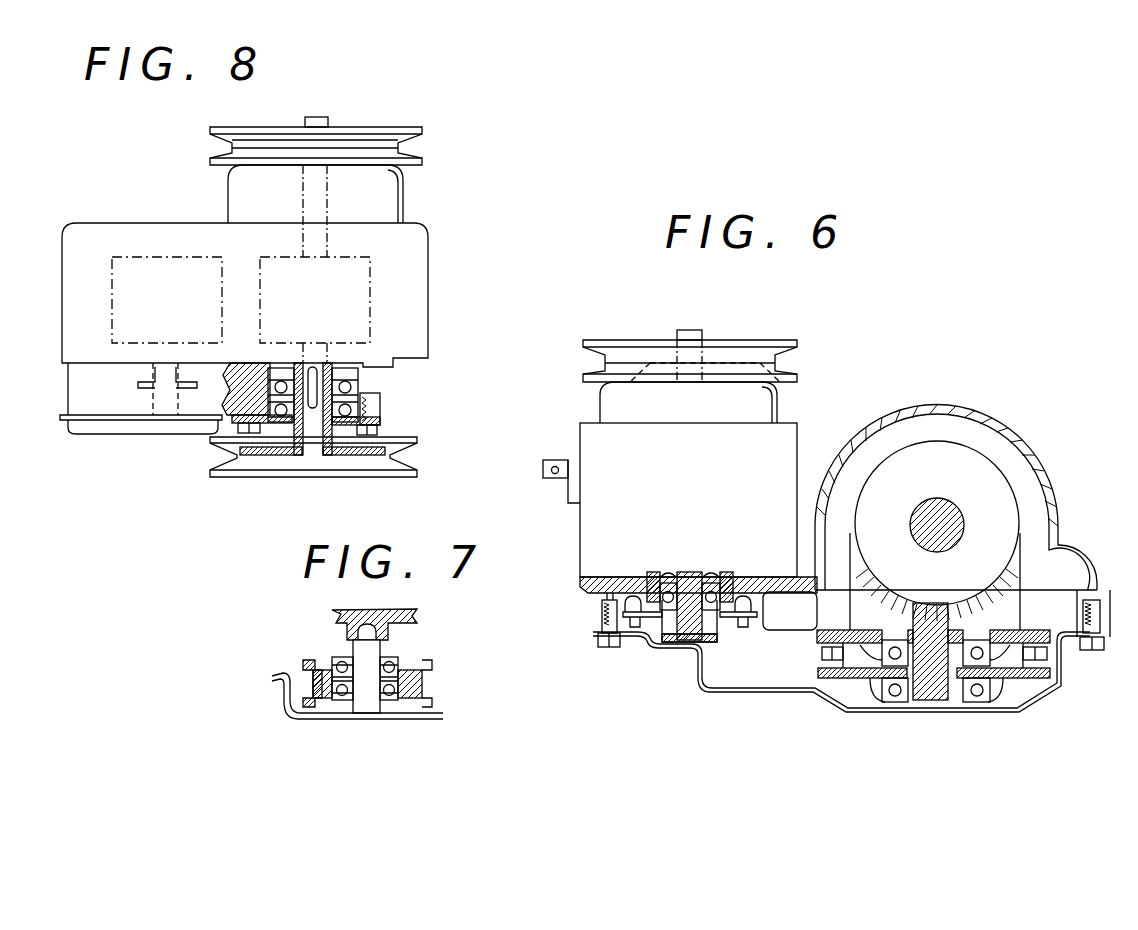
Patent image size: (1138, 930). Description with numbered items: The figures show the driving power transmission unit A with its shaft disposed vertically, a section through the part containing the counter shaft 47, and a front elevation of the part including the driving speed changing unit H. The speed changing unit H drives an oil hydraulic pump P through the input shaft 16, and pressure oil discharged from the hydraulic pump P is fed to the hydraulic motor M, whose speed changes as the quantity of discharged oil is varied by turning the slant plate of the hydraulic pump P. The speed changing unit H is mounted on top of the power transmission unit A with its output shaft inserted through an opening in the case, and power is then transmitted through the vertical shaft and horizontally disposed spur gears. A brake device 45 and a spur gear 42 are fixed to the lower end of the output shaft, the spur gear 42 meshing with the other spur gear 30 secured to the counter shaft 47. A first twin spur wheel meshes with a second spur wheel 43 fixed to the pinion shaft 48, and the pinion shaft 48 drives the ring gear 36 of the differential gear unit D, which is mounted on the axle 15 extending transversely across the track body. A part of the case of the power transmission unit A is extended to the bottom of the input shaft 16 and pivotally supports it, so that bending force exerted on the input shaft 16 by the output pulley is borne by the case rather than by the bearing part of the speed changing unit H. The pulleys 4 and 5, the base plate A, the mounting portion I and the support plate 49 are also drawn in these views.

In FIG. 8, the pulley 4 is at (412, 143).
In FIG. 6, the pulley 4 is at (618, 342).
In FIG. 8, the input shaft 16 is at (319, 117).
In FIG. 6, the input shaft 16 is at (698, 330).
In FIG. 8, the driving speed changing unit H is at (430, 297).
In FIG. 6, the driving speed changing unit H is at (712, 498).
In FIG. 8, the hydraulic motor M is at (167, 300).
In FIG. 8, the oil hydraulic pump P is at (315, 300).
In FIG. 8, the spur gear 42 is at (138, 385).
In FIG. 6, the spur gear 42 is at (717, 638).
In FIG. 8, the driving power transmission unit A is at (158, 435).
In FIG. 6, the driving power transmission unit A is at (776, 708).
In FIG. 8, the mounting portion I is at (180, 400).
In FIG. 6, the mounting portion I is at (690, 623).
In FIG. 8, the driven pulley 5 is at (417, 458).
In FIG. 7, the spur gear 30 is at (432, 663).
In FIG. 7, the counter shaft 47 is at (366, 712).
In FIG. 7, the support plate 49 is at (432, 703).
In FIG. 6, the axle 15 is at (945, 508).
In FIG. 6, the differential gear unit D is at (1065, 497).
In FIG. 6, the ring gear 36 is at (880, 600).
In FIG. 6, the brake device 45 is at (732, 620).
In FIG. 6, the second spur wheel 43 is at (837, 678).
In FIG. 6, the pinion shaft 48 is at (935, 688).